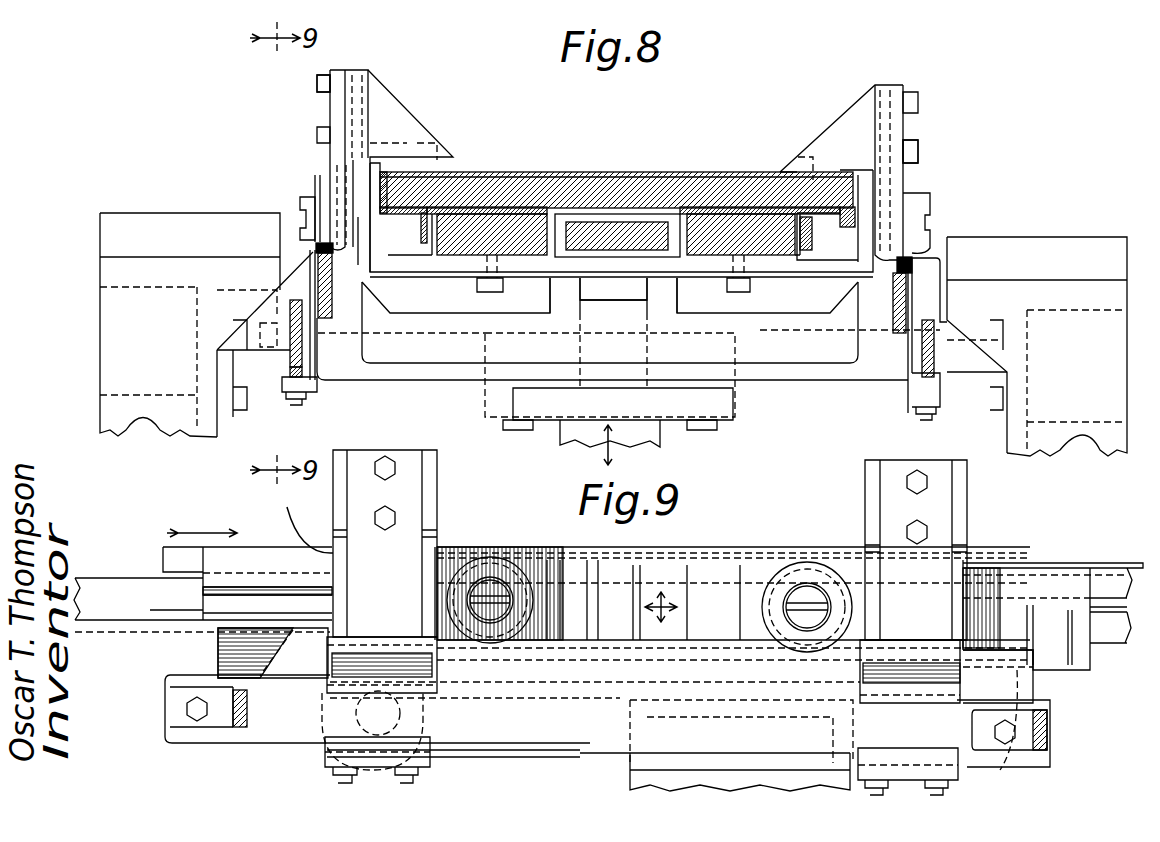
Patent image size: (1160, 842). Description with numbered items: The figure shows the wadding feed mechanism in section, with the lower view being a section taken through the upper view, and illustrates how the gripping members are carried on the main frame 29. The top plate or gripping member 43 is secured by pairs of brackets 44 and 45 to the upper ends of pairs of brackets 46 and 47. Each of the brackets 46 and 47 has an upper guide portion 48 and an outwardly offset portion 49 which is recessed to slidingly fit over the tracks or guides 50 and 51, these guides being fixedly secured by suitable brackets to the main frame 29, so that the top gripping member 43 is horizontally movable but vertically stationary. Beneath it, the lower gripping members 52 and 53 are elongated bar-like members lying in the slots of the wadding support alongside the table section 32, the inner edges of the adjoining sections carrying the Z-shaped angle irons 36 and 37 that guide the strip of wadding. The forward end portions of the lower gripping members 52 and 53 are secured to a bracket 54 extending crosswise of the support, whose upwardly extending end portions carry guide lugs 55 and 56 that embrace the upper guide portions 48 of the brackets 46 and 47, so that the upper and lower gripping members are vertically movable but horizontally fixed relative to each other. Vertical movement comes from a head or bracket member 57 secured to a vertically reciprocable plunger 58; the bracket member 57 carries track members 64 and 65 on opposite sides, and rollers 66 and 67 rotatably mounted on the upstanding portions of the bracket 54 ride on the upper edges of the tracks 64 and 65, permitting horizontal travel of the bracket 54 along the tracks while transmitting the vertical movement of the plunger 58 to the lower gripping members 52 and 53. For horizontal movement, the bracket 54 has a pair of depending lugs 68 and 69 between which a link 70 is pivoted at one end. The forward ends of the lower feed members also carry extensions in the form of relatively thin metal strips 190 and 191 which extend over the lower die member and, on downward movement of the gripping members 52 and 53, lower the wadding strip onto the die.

In FIG. 8, the main frame 29 is at (100, 340).
In FIG. 8, the table section 32 is at (614, 224).
In FIG. 8, the Z-shaped angle iron 36 is at (862, 200).
In FIG. 8, the Z-shaped angle iron 37 is at (385, 176).
In FIG. 8, the top plate or gripping member 43 is at (467, 172).
In FIG. 8, the bracket 44 is at (400, 115).
In FIG. 9, the bracket 44 is at (437, 487).
In FIG. 8, the bracket 45 is at (862, 118).
In FIG. 8, the bracket 46 is at (330, 103).
In FIG. 9, the bracket 46 is at (407, 523).
In FIG. 8, the bracket 47 is at (905, 128).
In FIG. 8, the upper guide portion 48 is at (325, 127).
In FIG. 9, the upper guide portion 48 is at (363, 567).
In FIG. 8, the outwardly offset portion 49 is at (307, 378).
In FIG. 9, the outwardly offset portion 49 is at (410, 677).
In FIG. 8, the track or guide 50 is at (302, 362).
In FIG. 9, the track or guide 50 is at (545, 738).
In FIG. 8, the track or guide 51 is at (922, 379).
In FIG. 8, the lower gripping member 52 is at (520, 214).
In FIG. 8, the lower gripping member 53 is at (722, 232).
In FIG. 8, the bracket 54 is at (455, 265).
In FIG. 9, the bracket 54 is at (573, 593).
In FIG. 9, the guide lug 55 is at (333, 560).
In FIG. 8, the guide lug 56 is at (337, 204).
In FIG. 9, the guide lug 56 is at (430, 563).
In FIG. 8, the head or bracket member 57 is at (462, 370).
In FIG. 9, the head or bracket member 57 is at (620, 765).
In FIG. 8, the plunger 58 is at (565, 428).
In FIG. 9, the plunger 58 is at (710, 780).
In FIG. 8, the track member 64 is at (332, 300).
In FIG. 9, the track member 64 is at (712, 648).
In FIG. 8, the track member 65 is at (893, 312).
In FIG. 8, the roller 66 is at (318, 188).
In FIG. 9, the roller 66 is at (802, 567).
In FIG. 9, the roller 67 is at (500, 573).
In FIG. 8, the depending lug 68 is at (560, 300).
In FIG. 9, the depending lug 68 is at (423, 724).
In FIG. 8, the depending lug 69 is at (680, 306).
In FIG. 8, the link 70 is at (624, 305).
In FIG. 8, the thin metal strip 190 is at (560, 207).
In FIG. 8, the thin metal strip 191 is at (703, 215).